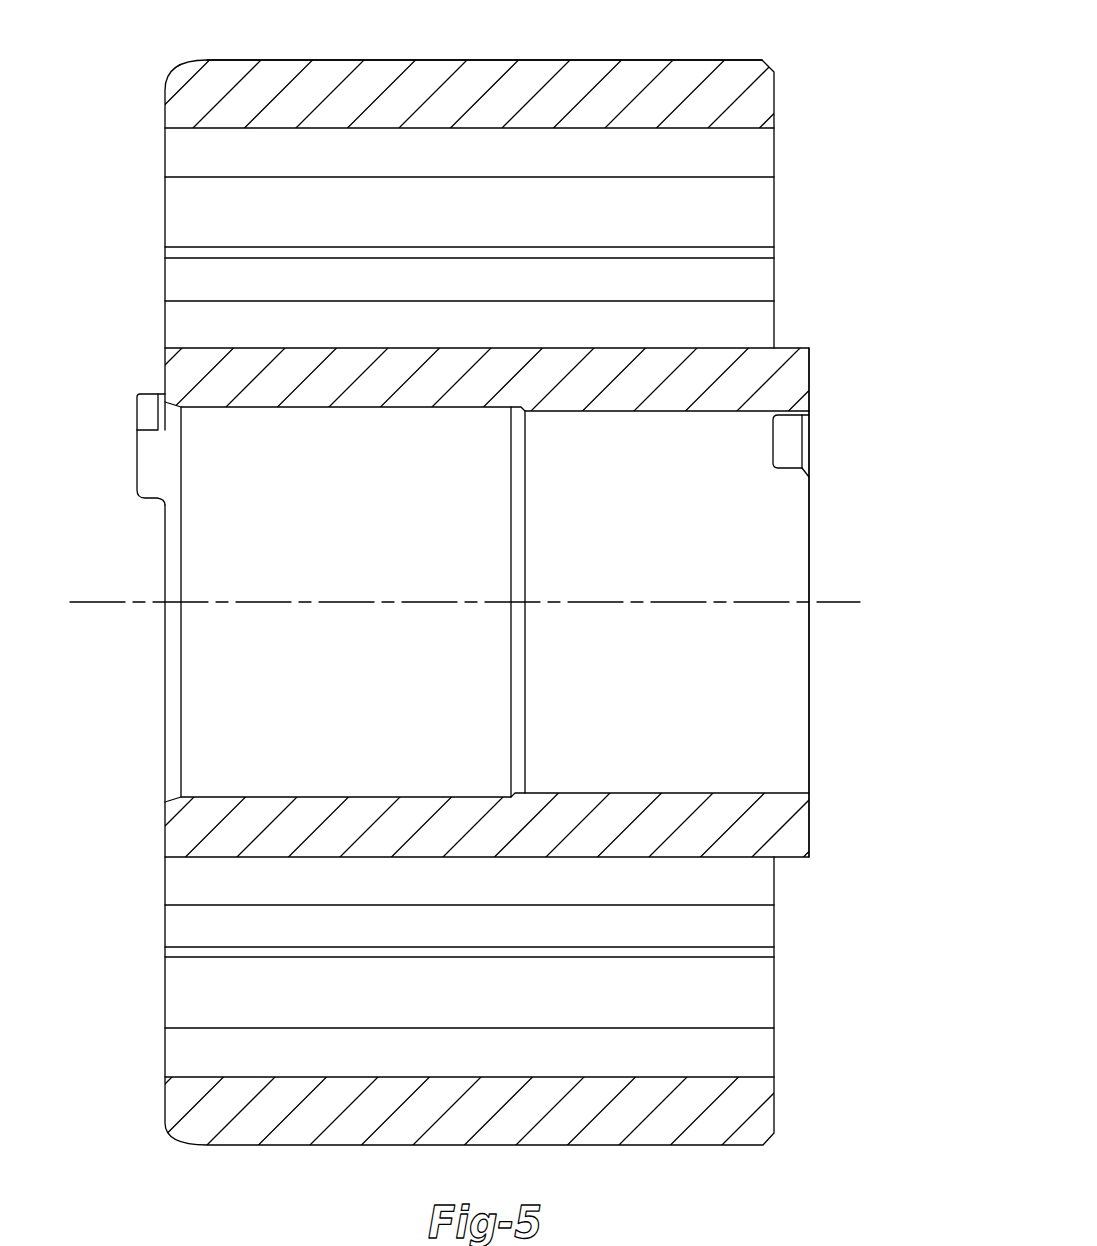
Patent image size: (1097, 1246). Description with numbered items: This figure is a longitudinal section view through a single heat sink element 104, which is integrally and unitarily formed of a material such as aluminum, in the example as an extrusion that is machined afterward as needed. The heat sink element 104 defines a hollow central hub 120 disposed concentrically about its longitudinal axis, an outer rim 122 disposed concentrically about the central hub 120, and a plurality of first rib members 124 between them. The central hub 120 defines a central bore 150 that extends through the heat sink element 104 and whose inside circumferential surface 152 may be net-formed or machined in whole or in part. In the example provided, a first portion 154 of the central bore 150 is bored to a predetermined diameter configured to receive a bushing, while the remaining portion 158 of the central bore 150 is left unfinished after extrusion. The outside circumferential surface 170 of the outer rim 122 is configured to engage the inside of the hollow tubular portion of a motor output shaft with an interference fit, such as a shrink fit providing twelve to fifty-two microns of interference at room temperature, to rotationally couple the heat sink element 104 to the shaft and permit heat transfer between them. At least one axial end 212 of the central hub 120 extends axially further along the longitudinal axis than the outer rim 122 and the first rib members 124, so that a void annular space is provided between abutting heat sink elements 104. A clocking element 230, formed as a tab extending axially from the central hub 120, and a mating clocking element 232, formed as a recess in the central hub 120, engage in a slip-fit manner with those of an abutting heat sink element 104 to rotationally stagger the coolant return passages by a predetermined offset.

The heat sink element 104 is at (818, 1013).
The central hub 120 is at (595, 378).
The outer rim 122 is at (747, 100).
The first rib members 124 is at (752, 928).
The central bore 150 is at (762, 557).
The inside circumferential surface 152 is at (787, 705).
The first portion 154 is at (366, 710).
The remaining portion 158 is at (677, 710).
The outside circumferential surface 170 is at (693, 60).
The axial end 212 is at (809, 373).
The clocking element 230 is at (150, 470).
The mating clocking element 232 is at (790, 443).